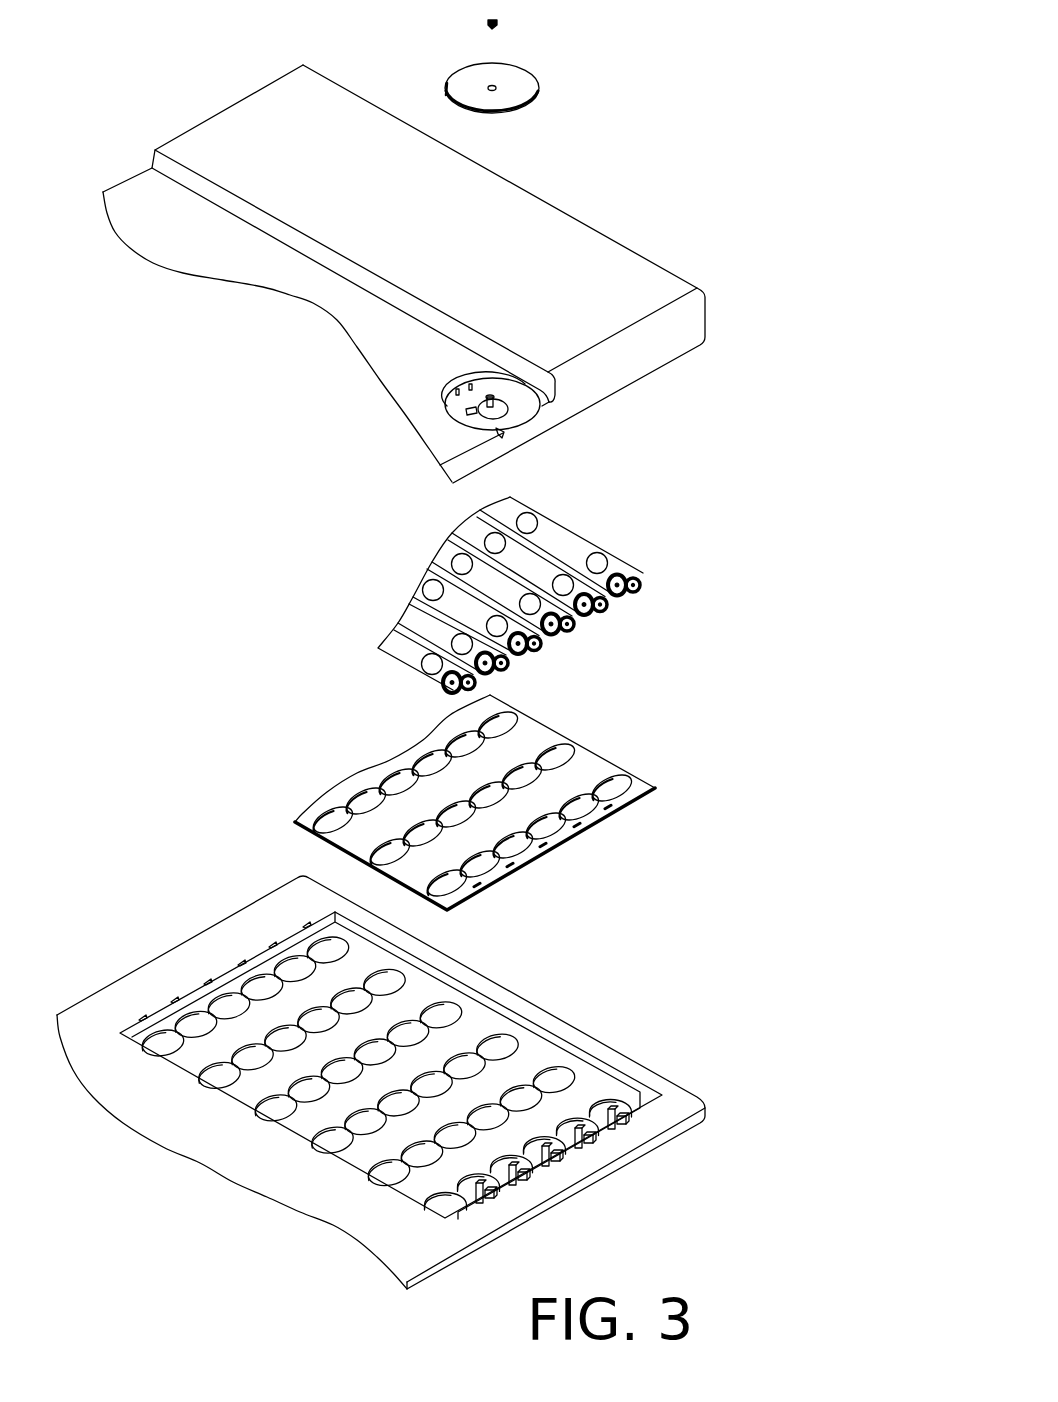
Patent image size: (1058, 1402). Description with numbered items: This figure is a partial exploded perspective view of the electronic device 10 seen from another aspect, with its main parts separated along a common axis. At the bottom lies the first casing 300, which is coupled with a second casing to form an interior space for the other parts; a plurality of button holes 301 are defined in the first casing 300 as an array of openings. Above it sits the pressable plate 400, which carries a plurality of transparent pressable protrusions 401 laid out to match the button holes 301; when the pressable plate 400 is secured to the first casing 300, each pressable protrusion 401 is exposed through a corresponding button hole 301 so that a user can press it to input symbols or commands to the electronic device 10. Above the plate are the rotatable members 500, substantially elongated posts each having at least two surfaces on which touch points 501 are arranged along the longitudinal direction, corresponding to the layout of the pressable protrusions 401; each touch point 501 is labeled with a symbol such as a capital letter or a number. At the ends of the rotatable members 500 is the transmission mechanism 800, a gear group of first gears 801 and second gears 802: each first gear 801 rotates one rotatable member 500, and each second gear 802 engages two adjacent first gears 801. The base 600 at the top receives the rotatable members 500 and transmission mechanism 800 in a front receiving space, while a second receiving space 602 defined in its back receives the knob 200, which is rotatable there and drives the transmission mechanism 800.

The electronic device 10 is at (116, 0).
The knob 200 is at (520, 85).
The base 600 is at (430, 274).
The second receiving space 602 is at (518, 408).
The rotatable member 500 is at (543, 604).
The touch point 501 is at (432, 662).
The transmission mechanism 800 is at (615, 626).
The first gear 801 is at (640, 577).
The second gear 802 is at (618, 598).
The pressable plate 400 is at (516, 799).
The pressable protrusion 401 is at (617, 793).
The first casing 300 is at (419, 1082).
The button hole 301 is at (558, 1083).